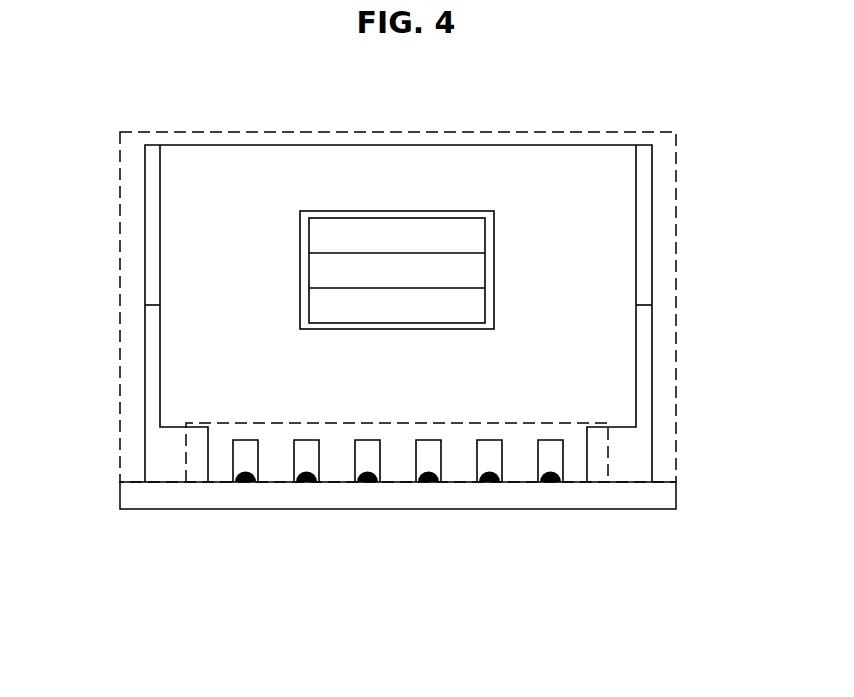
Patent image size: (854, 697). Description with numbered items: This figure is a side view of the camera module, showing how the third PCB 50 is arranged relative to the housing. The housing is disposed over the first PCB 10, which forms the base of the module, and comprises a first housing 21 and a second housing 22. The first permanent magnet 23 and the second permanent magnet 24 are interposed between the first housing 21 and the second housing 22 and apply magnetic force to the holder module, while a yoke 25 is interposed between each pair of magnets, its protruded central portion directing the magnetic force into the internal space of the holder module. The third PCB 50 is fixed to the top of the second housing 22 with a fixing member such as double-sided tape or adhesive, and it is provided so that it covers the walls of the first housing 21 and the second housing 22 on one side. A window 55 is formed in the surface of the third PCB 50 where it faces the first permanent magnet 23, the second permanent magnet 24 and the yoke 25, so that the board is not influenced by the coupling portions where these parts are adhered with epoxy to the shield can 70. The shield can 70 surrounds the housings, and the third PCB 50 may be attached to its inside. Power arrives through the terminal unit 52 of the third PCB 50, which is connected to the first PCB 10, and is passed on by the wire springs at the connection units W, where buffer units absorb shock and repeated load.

The first printed circuit board 10 is at (143, 500).
The first housing 21 is at (643, 340).
The second housing 22 is at (645, 255).
The first permanent magnet 23 is at (320, 310).
The second permanent magnet 24 is at (320, 237).
The yoke 25 is at (320, 273).
The third printed circuit board 50 is at (243, 162).
The terminal unit 52 is at (550, 440).
The window 55 is at (413, 211).
The shield can 70 is at (633, 130).
The connection unit W is at (424, 486).